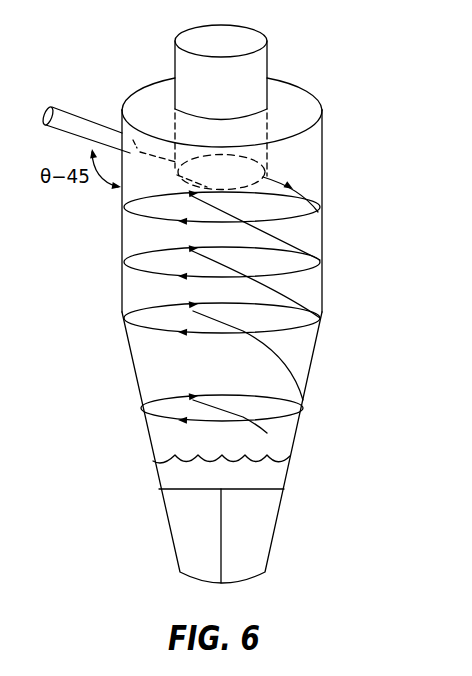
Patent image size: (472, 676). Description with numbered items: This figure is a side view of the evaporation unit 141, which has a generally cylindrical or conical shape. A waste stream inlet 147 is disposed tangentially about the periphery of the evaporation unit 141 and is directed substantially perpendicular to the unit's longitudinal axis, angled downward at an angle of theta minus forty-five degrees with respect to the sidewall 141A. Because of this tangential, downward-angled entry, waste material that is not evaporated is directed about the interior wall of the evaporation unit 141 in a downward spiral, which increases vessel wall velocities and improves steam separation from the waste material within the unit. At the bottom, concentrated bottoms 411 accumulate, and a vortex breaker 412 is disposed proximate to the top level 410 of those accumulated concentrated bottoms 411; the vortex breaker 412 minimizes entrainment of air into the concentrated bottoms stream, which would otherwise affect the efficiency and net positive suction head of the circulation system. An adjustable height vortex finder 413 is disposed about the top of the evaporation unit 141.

The evaporation unit 141 is at (327, 137).
The sidewall 141A is at (122, 202).
The waste stream inlet 147 is at (73, 116).
The adjustable height vortex finder 413 is at (266, 160).
The top level 410 is at (294, 458).
The concentrated bottoms 411 is at (252, 537).
The vortex breaker 412 is at (220, 522).